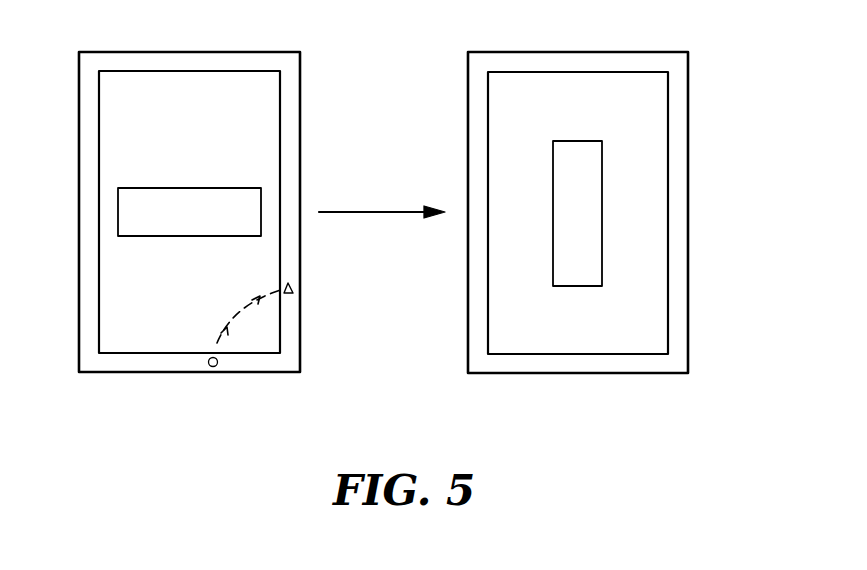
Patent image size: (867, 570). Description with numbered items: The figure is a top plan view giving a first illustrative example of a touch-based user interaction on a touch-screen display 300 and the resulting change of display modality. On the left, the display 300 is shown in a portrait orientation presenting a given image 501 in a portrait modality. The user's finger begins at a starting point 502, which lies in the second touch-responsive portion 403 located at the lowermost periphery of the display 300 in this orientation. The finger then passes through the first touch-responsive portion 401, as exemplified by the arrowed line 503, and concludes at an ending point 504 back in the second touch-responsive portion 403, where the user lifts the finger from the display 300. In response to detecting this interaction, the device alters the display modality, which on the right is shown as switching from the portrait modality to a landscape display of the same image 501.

The touch-screen display 300 is at (383, 214).
The first touch-responsive portion 401 is at (264, 115).
The second touch-responsive portion 403 is at (290, 320).
The image 501 is at (145, 187).
The starting point 502 is at (208, 366).
The arrowed line 503 is at (235, 320).
The ending point 504 is at (293, 289).